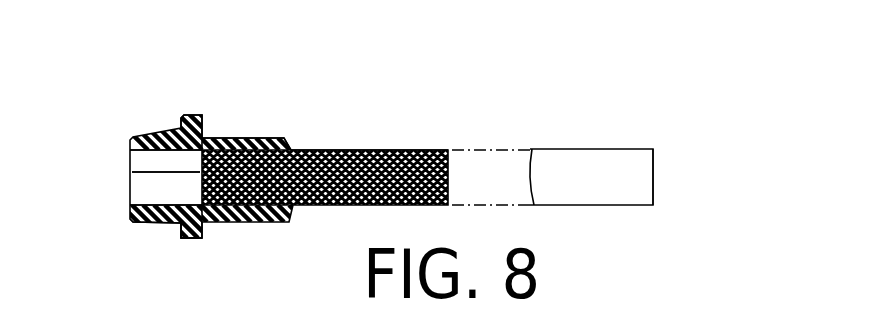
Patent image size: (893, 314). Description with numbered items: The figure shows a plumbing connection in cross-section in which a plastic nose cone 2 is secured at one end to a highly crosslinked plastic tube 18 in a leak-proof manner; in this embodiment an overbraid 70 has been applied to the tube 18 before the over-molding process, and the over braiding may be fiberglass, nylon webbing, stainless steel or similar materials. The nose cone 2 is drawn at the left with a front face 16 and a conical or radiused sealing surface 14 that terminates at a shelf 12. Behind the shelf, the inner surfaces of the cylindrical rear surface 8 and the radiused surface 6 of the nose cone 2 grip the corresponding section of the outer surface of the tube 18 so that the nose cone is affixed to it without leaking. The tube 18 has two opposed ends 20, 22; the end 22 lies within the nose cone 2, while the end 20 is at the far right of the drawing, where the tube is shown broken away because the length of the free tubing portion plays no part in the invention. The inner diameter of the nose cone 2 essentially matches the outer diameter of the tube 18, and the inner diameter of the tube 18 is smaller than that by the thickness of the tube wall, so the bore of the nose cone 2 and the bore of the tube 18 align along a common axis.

The nose cone 2 is at (156, 231).
The radiused surface 6 is at (283, 150).
The cylindrical rear surface 8 is at (237, 138).
The shelf 12 is at (188, 115).
The sealing surface 14 is at (159, 131).
The front face 16 is at (130, 167).
The tube 18 is at (605, 148).
The end 20 is at (655, 189).
The end 22 is at (202, 186).
The overbraid 70 is at (393, 150).